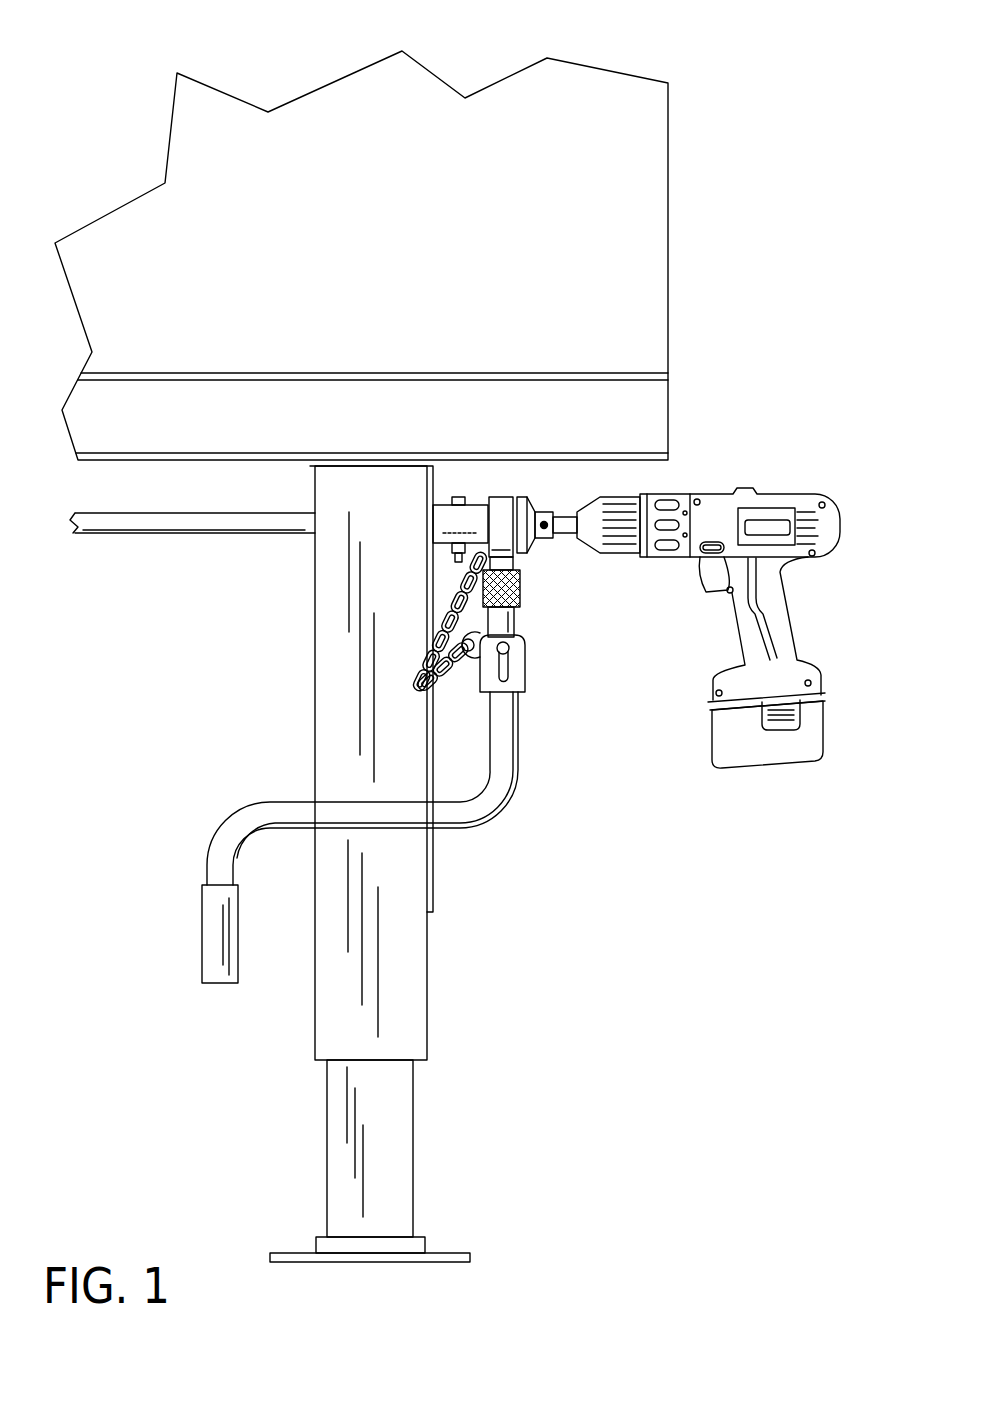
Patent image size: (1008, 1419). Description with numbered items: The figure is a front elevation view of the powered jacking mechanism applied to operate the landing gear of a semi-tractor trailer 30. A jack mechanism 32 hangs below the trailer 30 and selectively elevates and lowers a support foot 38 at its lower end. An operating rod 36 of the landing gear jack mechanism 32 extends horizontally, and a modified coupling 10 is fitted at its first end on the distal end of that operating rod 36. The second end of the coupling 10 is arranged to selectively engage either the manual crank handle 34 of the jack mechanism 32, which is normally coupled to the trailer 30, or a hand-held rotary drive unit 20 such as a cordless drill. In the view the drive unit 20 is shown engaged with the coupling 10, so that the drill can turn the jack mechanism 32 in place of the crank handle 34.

The coupling 10 is at (554, 575).
The hand-held rotary drive unit 20 is at (805, 591).
The semi-tractor trailer 30 is at (694, 273).
The jack mechanism 32 is at (407, 987).
The manual crank handle 34 is at (222, 845).
The operating rod 36 is at (163, 528).
The support foot 38 is at (432, 1258).